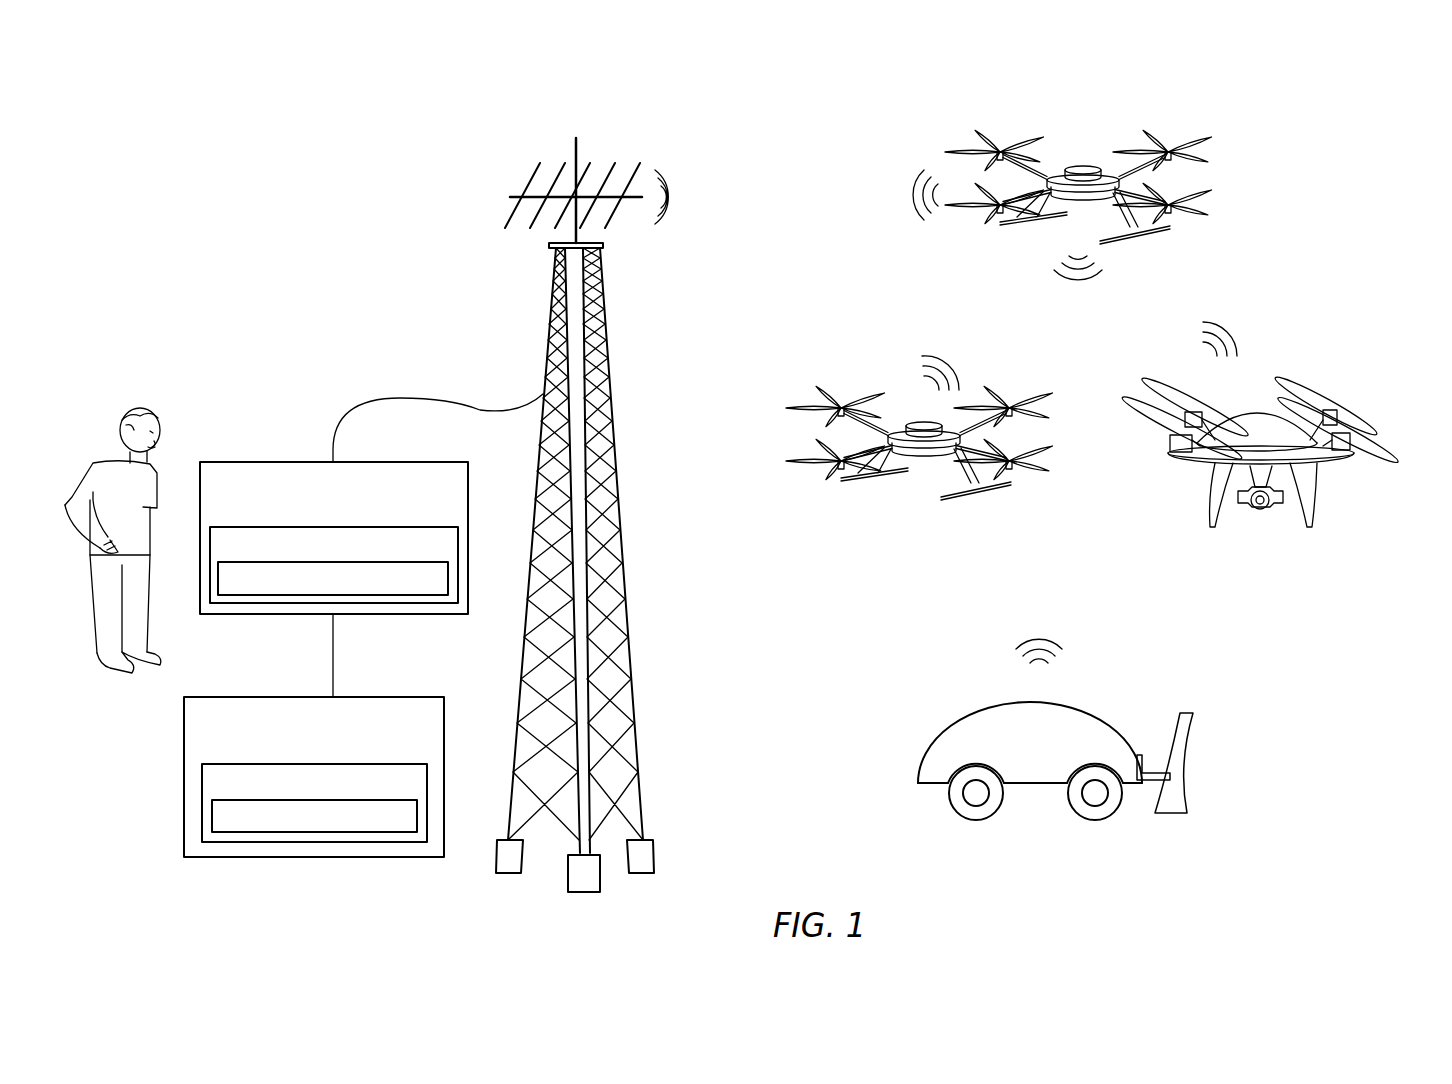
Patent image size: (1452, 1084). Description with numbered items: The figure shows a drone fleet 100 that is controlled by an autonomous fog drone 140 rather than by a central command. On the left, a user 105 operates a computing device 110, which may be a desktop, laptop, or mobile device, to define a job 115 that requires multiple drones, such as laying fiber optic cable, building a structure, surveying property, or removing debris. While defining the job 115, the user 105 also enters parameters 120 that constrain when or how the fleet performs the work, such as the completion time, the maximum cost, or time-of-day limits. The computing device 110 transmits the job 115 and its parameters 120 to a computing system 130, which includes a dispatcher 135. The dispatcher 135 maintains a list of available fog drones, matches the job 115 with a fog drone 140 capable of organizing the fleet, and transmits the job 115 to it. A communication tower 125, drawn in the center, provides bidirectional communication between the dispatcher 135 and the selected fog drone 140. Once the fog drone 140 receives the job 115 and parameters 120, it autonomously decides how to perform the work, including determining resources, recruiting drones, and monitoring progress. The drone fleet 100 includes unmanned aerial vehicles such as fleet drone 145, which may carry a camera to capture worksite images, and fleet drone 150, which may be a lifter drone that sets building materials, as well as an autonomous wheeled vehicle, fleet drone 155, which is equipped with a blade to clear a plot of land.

The drone fleet 100 is at (843, 117).
The user 105 is at (247, 367).
The computing device 110 is at (430, 754).
The job 115 is at (445, 591).
The parameters 120 is at (412, 829).
The communication tower 125 is at (556, 132).
The computing system 130 is at (460, 521).
The dispatcher 135 is at (452, 556).
The fog drone 140 is at (1112, 125).
The fleet drone 145 is at (927, 480).
The fleet drone 150 is at (1253, 525).
The fleet drone 155 is at (1040, 822).